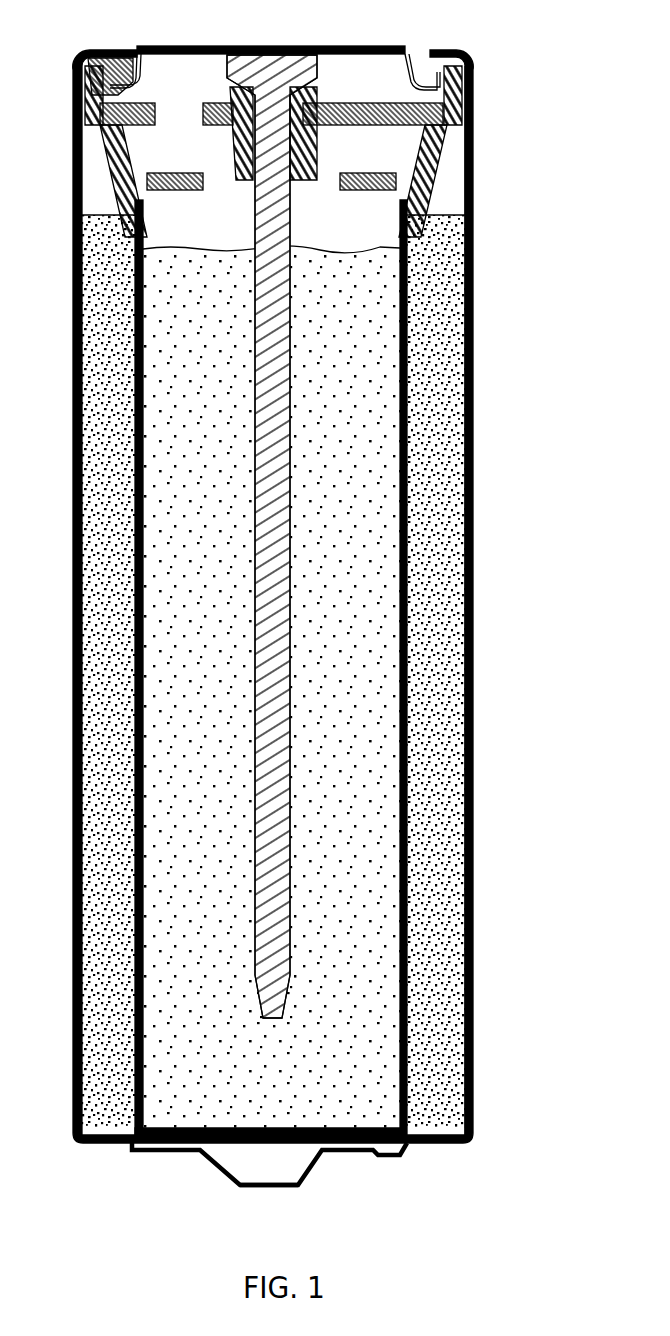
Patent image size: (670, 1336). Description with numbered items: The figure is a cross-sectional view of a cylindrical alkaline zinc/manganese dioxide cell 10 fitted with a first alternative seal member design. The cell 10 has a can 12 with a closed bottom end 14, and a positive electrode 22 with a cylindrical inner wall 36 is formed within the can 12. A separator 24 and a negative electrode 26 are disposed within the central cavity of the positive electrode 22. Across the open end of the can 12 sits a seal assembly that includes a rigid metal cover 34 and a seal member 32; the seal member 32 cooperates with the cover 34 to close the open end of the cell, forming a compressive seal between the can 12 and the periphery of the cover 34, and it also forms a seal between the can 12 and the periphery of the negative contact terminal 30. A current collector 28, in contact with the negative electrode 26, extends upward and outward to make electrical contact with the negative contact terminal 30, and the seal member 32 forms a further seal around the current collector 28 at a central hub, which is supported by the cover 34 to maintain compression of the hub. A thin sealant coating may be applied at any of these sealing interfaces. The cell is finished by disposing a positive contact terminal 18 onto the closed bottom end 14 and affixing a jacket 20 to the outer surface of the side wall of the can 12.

The cell 10 is at (525, 217).
The can 12 is at (477, 357).
The closed bottom end 14 is at (277, 1145).
The positive contact terminal 18 is at (254, 1188).
The jacket 20 is at (477, 293).
The positive electrode 22 is at (478, 495).
The separator 24 is at (410, 593).
The negative electrode 26 is at (383, 685).
The current collector 28 is at (273, 50).
The negative contact terminal 30 is at (336, 48).
The seal member 32 is at (474, 133).
The rigid metal cover 34 is at (375, 103).
The cylindrical inner wall 36 is at (132, 568).